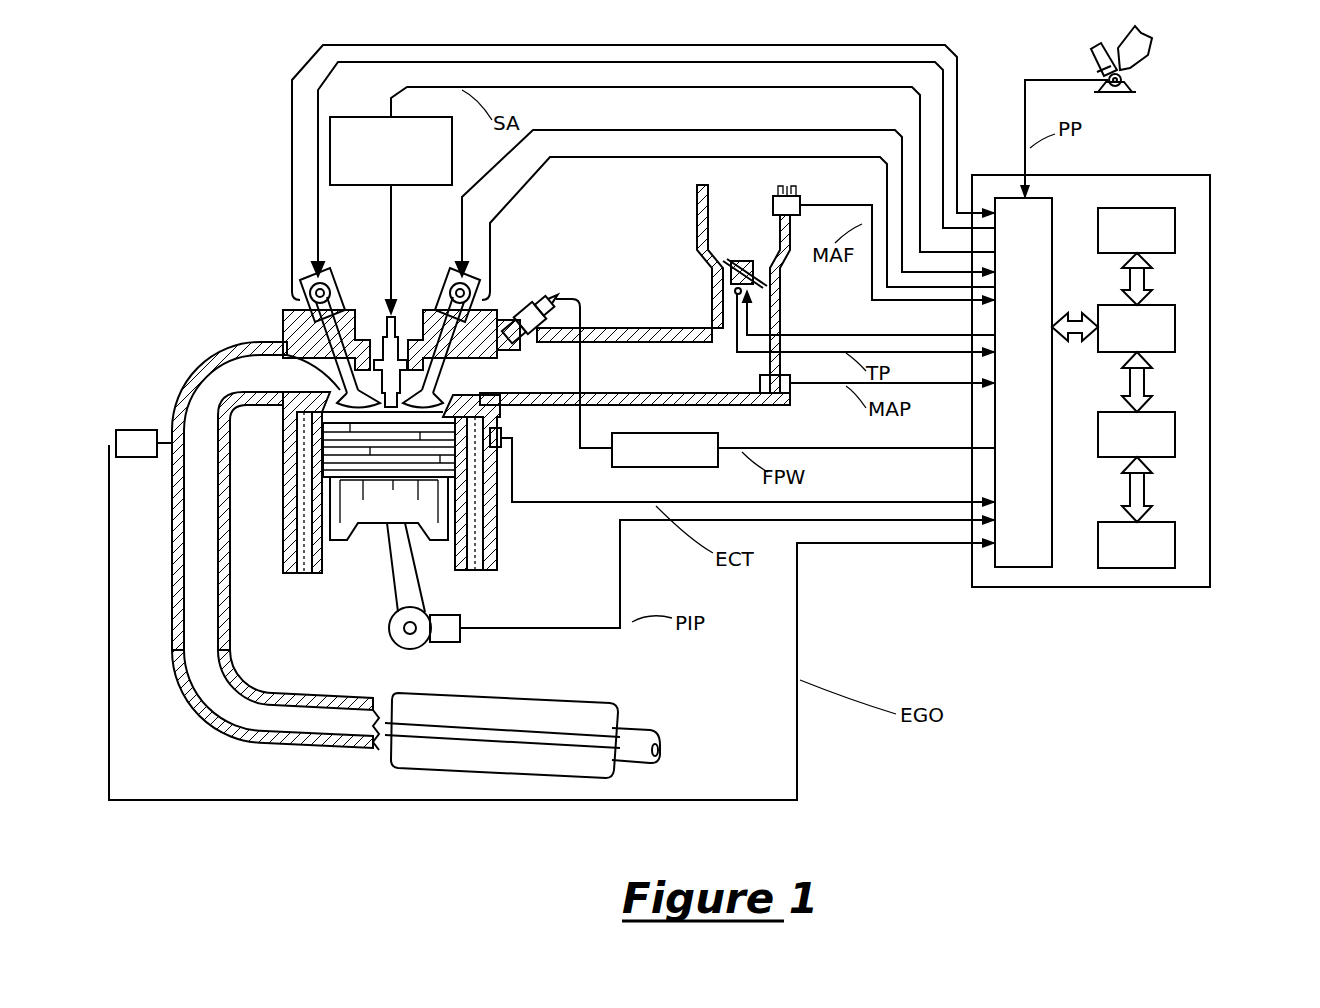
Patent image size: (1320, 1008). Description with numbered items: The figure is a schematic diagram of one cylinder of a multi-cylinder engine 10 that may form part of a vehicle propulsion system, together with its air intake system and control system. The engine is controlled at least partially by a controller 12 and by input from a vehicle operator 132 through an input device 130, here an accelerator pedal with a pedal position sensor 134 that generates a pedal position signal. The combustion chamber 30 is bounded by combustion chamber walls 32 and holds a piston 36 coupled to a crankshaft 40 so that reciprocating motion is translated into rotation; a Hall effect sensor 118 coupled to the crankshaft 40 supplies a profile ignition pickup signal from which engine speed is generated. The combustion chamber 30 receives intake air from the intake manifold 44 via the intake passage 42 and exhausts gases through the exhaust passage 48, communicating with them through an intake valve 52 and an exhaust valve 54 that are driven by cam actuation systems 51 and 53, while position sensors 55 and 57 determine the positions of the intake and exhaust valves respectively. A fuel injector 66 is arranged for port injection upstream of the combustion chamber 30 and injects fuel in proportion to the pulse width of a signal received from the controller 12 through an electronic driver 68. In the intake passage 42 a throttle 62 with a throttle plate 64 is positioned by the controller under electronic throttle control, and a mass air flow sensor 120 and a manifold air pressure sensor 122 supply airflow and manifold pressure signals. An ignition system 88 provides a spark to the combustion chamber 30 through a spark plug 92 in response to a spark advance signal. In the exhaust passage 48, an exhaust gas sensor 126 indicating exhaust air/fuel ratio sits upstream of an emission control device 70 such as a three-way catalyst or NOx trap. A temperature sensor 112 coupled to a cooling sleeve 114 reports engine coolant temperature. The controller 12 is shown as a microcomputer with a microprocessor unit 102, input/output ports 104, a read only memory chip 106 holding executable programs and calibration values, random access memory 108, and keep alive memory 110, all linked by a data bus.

The engine 10 is at (212, 256).
The controller 12 is at (1136, 369).
The combustion chamber 30 is at (388, 413).
The combustion chamber walls 32 is at (332, 560).
The piston 36 is at (392, 513).
The crankshaft 40 is at (400, 648).
The intake passage 42 is at (758, 236).
The intake manifold 44 is at (688, 380).
The exhaust passage 48 is at (265, 388).
The cam actuation system 51 is at (458, 282).
The intake valve 52 is at (430, 387).
The cam actuation system 53 is at (325, 282).
The exhaust valve 54 is at (343, 378).
The position sensor 55 is at (487, 298).
The position sensor 57 is at (298, 297).
The throttle 62 is at (768, 270).
The throttle plate 64 is at (715, 272).
The fuel injector 66 is at (528, 310).
The electronic driver 68 is at (614, 466).
The emission control device 70 is at (573, 703).
The ignition system 88 is at (342, 116).
The spark plug 92 is at (393, 318).
The microprocessor unit 102 is at (1178, 323).
The input/output ports 104 is at (1053, 208).
The read only memory chip 106 is at (1178, 226).
The random access memory 108 is at (1178, 430).
The keep alive memory 110 is at (1178, 541).
The temperature sensor 112 is at (505, 450).
The cooling sleeve 114 is at (490, 527).
The Hall effect sensor 118 is at (447, 642).
The mass air flow sensor 120 is at (797, 198).
The manifold air pressure sensor 122 is at (787, 395).
The exhaust gas sensor 126 is at (116, 433).
The input device 130 is at (1095, 56).
The vehicle operator 132 is at (1148, 46).
The pedal position sensor 134 is at (1125, 80).